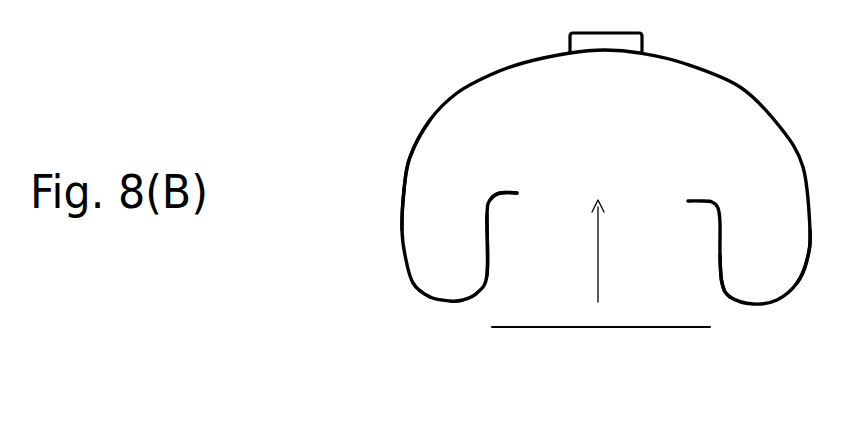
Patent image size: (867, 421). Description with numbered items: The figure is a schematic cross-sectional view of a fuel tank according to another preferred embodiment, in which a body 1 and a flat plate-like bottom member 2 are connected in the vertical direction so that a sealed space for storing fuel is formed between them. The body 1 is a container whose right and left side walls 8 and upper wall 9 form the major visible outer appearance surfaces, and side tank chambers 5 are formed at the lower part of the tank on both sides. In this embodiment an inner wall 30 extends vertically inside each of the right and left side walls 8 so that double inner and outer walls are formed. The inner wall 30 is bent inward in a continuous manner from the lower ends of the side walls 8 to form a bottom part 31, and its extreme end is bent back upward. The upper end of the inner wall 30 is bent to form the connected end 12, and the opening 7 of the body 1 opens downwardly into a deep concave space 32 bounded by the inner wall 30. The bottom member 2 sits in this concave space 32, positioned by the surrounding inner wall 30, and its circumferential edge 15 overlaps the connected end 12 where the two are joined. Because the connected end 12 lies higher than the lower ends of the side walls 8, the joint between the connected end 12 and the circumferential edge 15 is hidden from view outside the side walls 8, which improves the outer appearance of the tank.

The body 1 is at (456, 84).
The bottom member 2 is at (650, 330).
The side tank chambers 5 is at (433, 273).
The opening 7 is at (625, 197).
The side walls 8 is at (403, 167).
The upper wall 9 is at (678, 62).
The connected end 12 is at (505, 190).
The circumferential edge 15 is at (540, 329).
The inner wall 30 is at (482, 237).
The bottom part 31 is at (433, 300).
The concave space 32 is at (662, 263).